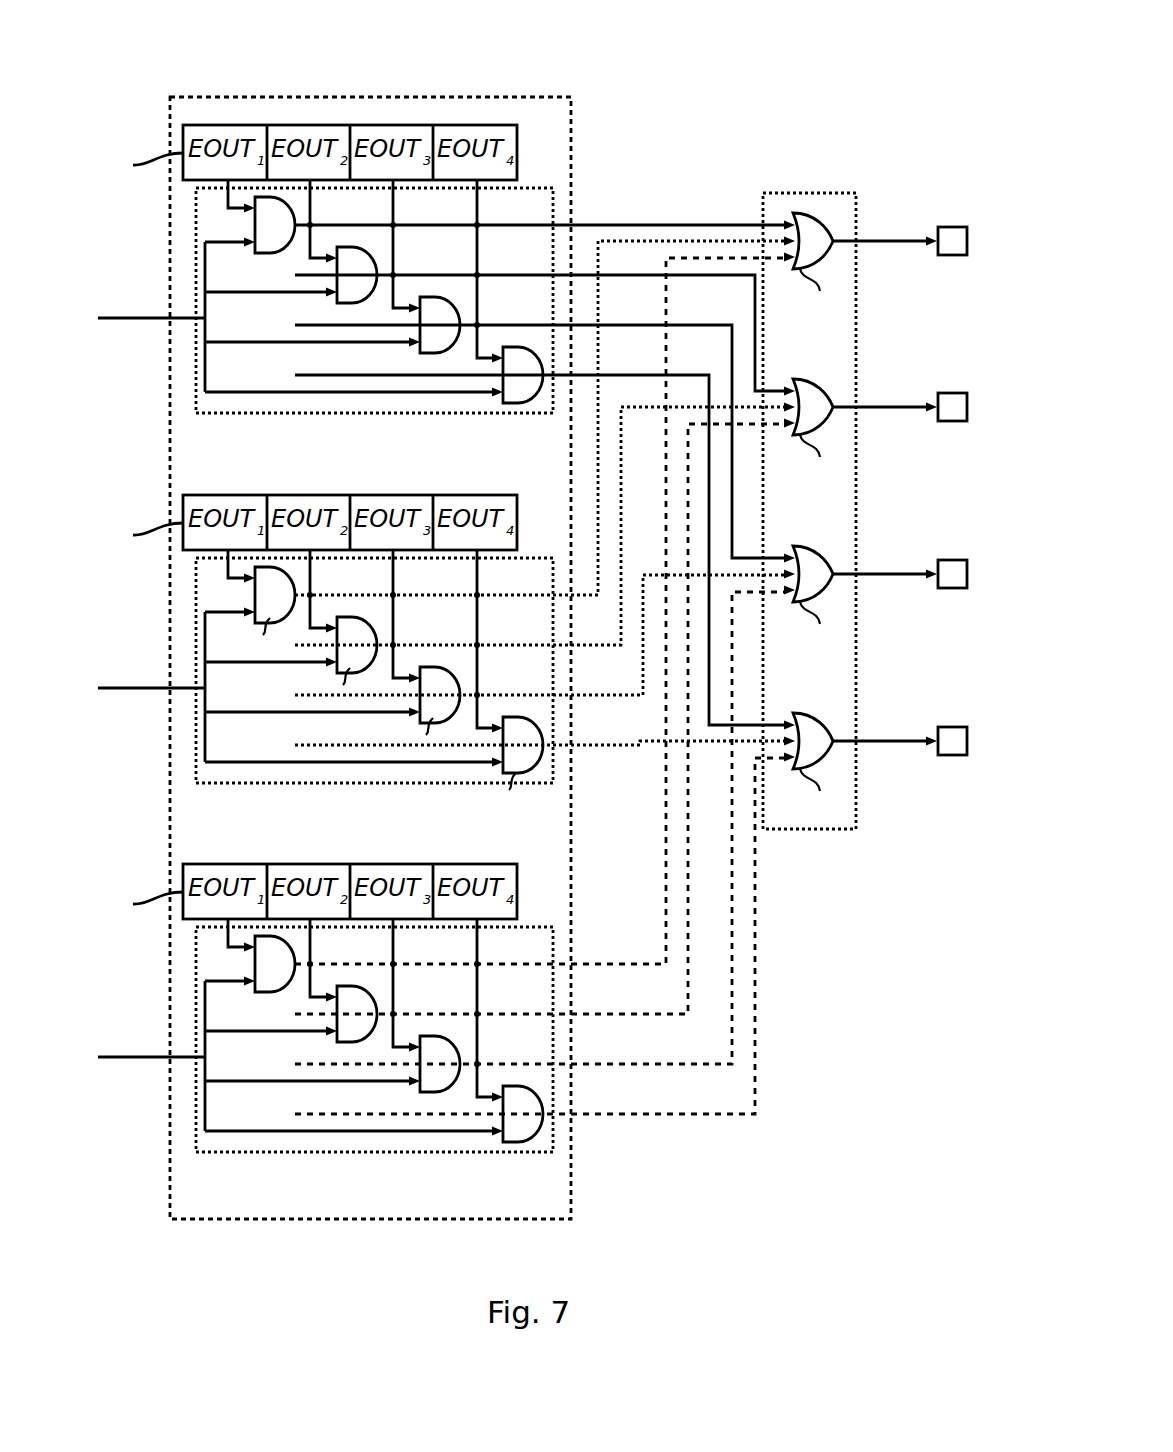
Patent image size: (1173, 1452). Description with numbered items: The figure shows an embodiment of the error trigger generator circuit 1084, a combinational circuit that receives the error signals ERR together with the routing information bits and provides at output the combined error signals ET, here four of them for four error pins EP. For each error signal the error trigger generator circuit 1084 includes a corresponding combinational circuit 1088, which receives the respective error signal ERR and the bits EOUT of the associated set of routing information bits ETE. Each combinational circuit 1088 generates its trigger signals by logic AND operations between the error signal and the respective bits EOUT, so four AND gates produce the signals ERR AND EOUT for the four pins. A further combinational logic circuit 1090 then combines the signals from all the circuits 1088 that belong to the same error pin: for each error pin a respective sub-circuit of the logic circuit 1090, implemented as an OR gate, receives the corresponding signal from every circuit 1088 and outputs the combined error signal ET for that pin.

The error trigger generator circuit 1084 is at (691, 75).
The combinational circuits 1088 is at (240, 97).
The combinational logic circuit 1090 is at (765, 195).